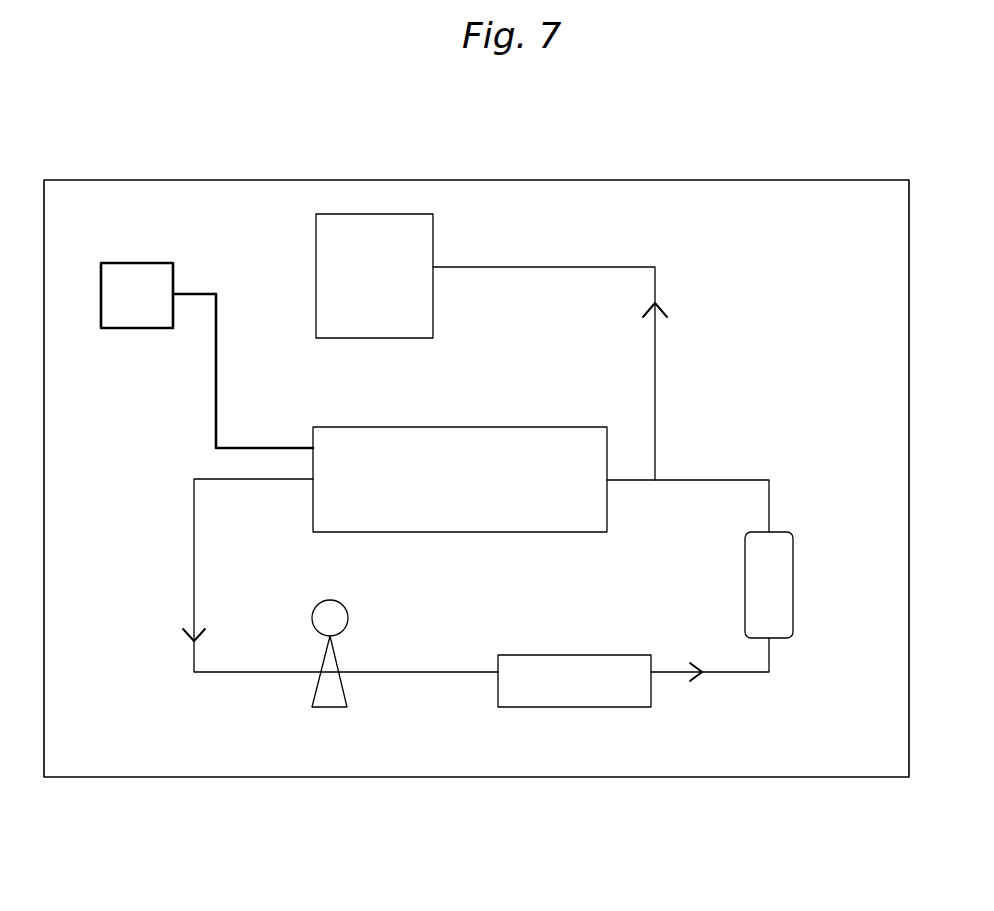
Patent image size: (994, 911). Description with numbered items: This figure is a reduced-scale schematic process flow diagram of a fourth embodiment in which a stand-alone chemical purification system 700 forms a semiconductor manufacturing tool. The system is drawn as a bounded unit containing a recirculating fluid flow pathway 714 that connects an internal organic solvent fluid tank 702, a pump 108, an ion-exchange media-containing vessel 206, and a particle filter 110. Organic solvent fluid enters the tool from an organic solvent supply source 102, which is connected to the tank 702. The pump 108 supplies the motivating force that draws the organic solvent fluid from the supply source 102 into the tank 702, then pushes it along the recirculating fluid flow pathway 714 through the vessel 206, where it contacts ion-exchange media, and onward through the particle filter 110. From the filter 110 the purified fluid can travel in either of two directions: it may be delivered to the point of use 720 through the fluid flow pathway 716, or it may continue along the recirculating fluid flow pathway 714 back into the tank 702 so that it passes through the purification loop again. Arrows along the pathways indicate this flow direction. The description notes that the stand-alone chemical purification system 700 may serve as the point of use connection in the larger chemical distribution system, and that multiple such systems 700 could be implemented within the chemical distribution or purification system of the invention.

The stand-alone chemical purification system 700 is at (736, 127).
The organic solvent supply source 102 is at (207, 355).
The point of use 720 is at (374, 276).
The fluid flow pathway 716 is at (656, 397).
The internal organic solvent fluid tank 702 is at (460, 479).
The recirculating fluid flow pathway 714 is at (194, 505).
The particle filter 110 is at (795, 581).
The ion-exchange media-containing vessel 206 is at (574, 681).
The pump 108 is at (322, 670).